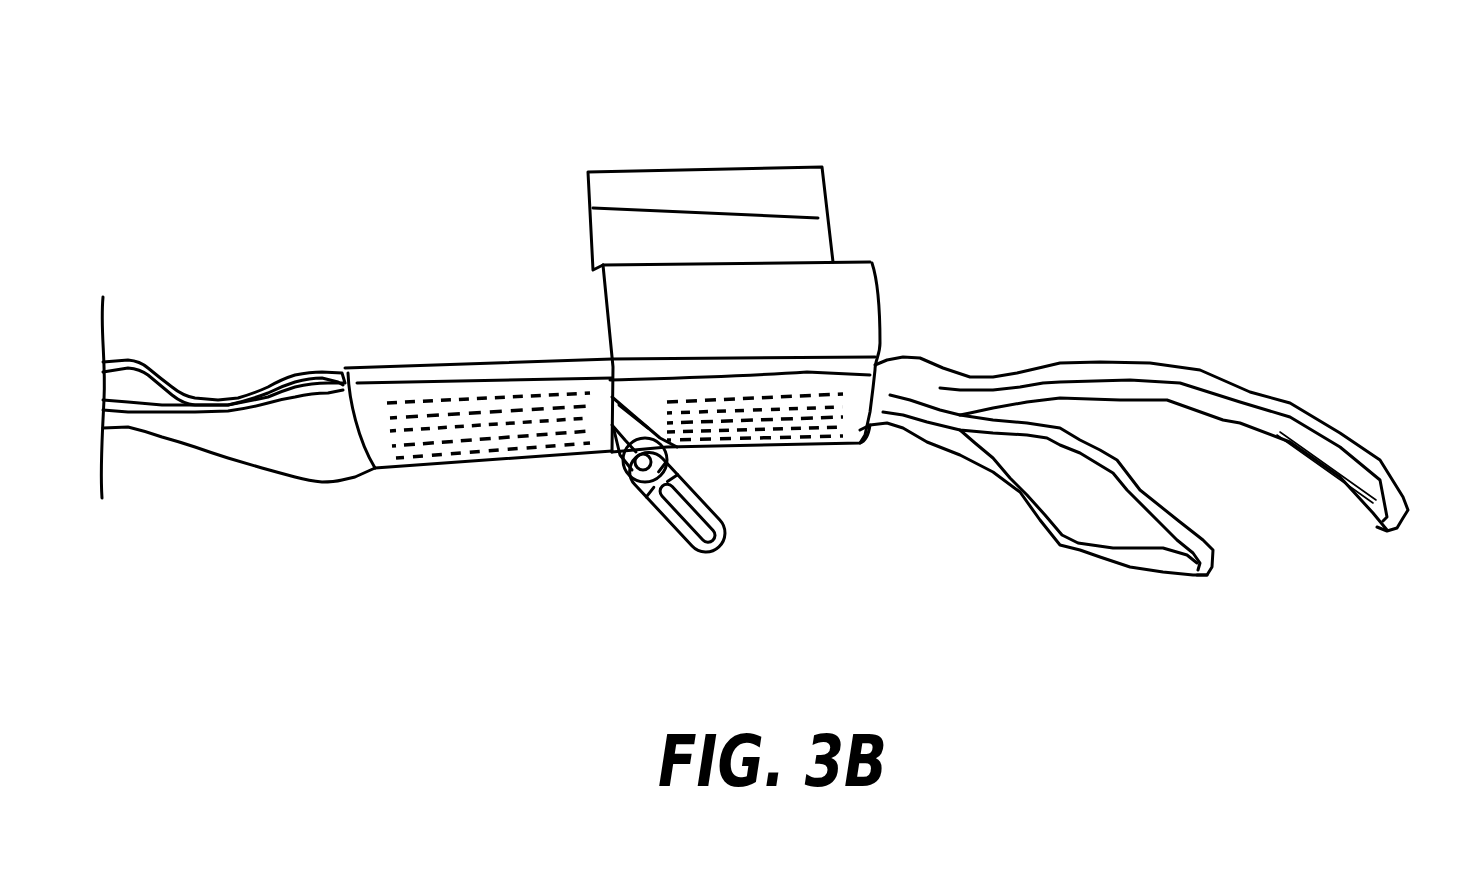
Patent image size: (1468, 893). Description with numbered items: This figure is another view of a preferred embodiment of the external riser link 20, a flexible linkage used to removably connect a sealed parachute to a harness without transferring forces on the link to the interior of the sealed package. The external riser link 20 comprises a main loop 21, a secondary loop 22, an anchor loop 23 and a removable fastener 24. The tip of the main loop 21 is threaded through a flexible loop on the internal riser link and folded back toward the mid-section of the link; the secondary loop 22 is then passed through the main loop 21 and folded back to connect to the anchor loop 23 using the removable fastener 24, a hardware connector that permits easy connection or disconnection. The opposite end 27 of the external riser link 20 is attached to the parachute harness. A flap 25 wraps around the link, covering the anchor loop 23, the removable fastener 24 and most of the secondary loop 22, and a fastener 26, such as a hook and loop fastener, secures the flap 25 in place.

The external riser link 20 is at (1156, 152).
The main loop 21 is at (1367, 452).
The secondary loop 22 is at (1193, 580).
The anchor loop 23 is at (612, 455).
The removable fastener 24 is at (718, 545).
The flap 25 is at (878, 283).
The fastener 26 is at (822, 190).
The end 27 is at (290, 378).